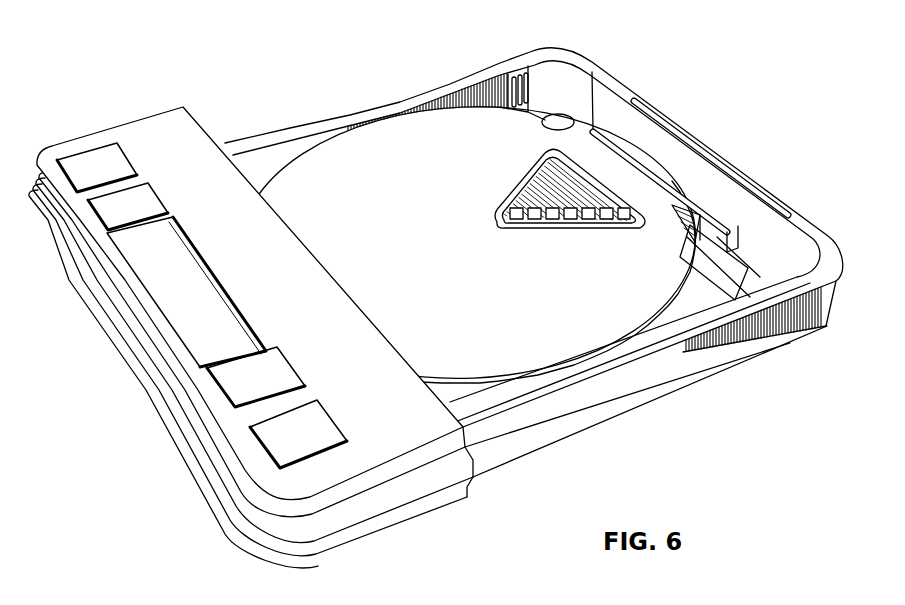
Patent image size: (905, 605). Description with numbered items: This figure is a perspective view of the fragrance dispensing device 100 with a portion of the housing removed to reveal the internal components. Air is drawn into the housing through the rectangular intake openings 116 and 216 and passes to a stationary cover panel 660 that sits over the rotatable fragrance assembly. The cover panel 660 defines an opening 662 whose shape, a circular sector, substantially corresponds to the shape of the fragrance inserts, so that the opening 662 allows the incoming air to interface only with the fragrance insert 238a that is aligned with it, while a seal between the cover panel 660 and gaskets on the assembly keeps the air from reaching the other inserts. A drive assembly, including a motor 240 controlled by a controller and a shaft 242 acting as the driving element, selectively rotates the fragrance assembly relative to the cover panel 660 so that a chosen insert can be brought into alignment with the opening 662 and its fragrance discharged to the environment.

The fragrance dispensing device 100 is at (108, 48).
The intake openings 116 is at (780, 333).
The intake openings 216 is at (447, 100).
The fragrance insert 238a is at (590, 177).
The motor 240 is at (737, 273).
The shaft 242 is at (697, 233).
The cover panel 660 is at (358, 160).
The opening 662 is at (527, 160).